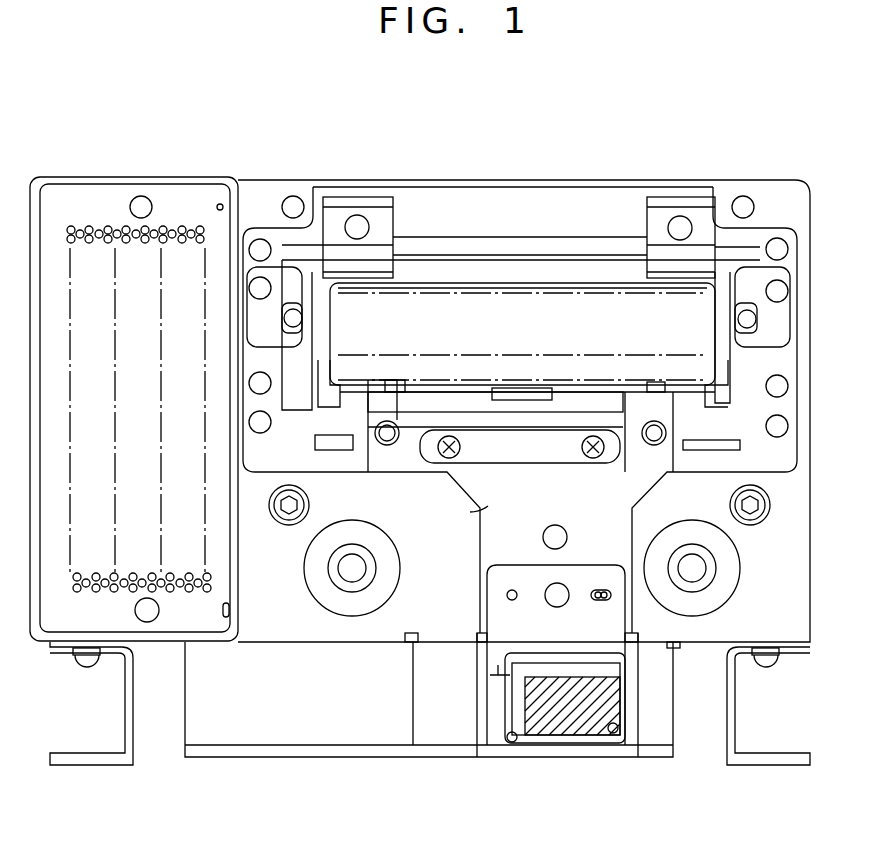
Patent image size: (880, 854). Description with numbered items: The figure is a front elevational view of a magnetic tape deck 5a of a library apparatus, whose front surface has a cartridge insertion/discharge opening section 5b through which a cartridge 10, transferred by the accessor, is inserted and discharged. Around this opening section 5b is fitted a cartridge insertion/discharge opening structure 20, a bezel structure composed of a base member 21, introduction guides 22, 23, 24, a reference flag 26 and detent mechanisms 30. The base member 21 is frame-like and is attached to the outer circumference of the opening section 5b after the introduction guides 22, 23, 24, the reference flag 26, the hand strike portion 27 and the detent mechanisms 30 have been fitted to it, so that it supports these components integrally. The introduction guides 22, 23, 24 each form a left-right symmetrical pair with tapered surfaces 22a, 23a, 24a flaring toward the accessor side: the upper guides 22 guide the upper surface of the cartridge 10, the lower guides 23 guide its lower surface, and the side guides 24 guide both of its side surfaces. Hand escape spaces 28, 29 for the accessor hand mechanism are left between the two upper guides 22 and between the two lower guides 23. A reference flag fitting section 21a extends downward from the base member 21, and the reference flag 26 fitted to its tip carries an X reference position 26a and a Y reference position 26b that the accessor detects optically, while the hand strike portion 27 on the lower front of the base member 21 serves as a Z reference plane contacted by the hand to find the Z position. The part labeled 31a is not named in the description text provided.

The deck 5a is at (233, 190).
The cartridge insertion/discharge opening section 5b is at (470, 300).
The cartridge 10 is at (580, 295).
The cartridge insertion/discharge opening structure 20 is at (305, 190).
The base member 21 is at (765, 468).
The reference flag fitting section 21a is at (470, 512).
The introduction guide 22 is at (368, 210).
The tapered surface 22a is at (400, 232).
The introduction guide 23 is at (400, 395).
The tapered surface 23a is at (390, 382).
The introduction guide 24 is at (262, 250).
The tapered surface 24a is at (312, 265).
The reference flag 26 is at (603, 737).
The X reference position 26a is at (527, 705).
The Y reference position 26b is at (615, 672).
The hand strike portion 27 is at (485, 440).
The hand escape space 28 is at (527, 258).
The hand escape space 29 is at (560, 400).
The detent mechanism 30 is at (330, 410).
The hook 31a is at (330, 372).